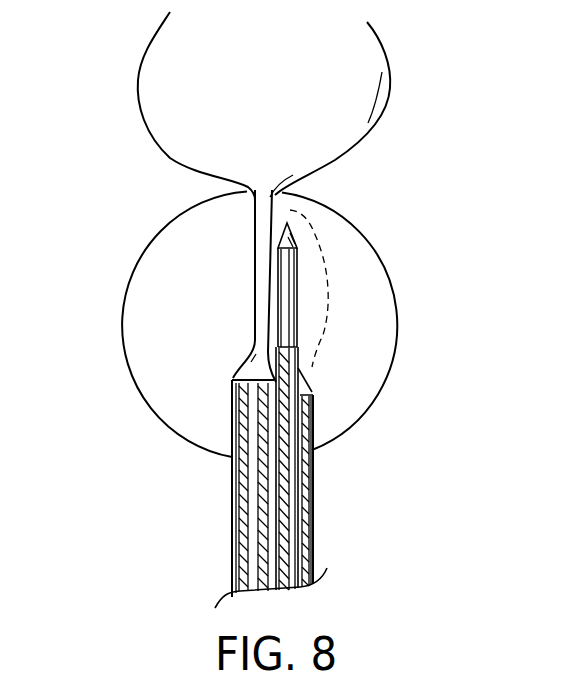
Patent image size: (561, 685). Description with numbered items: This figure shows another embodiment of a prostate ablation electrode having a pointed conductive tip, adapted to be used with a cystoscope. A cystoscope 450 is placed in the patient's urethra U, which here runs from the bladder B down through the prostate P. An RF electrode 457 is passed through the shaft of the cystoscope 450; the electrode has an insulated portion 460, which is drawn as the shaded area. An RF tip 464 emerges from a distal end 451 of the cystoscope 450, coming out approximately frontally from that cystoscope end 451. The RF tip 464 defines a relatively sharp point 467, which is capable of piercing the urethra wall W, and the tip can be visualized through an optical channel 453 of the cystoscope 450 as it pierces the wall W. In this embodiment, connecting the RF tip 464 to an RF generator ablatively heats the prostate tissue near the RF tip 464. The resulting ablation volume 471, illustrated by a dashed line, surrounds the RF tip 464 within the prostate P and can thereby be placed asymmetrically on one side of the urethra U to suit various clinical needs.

The bladder B is at (148, 42).
The prostate P is at (340, 212).
The urethra U is at (253, 252).
The urethra wall W is at (303, 390).
The cystoscope 450 is at (233, 510).
The distal end of the cystoscope 451 is at (313, 396).
The optical channel 453 is at (262, 475).
The RF electrode 457 is at (265, 550).
The insulated portion 460 is at (284, 499).
The RF tip 464 is at (297, 294).
The sharp point 467 is at (297, 233).
The ablation volume 471 is at (323, 335).